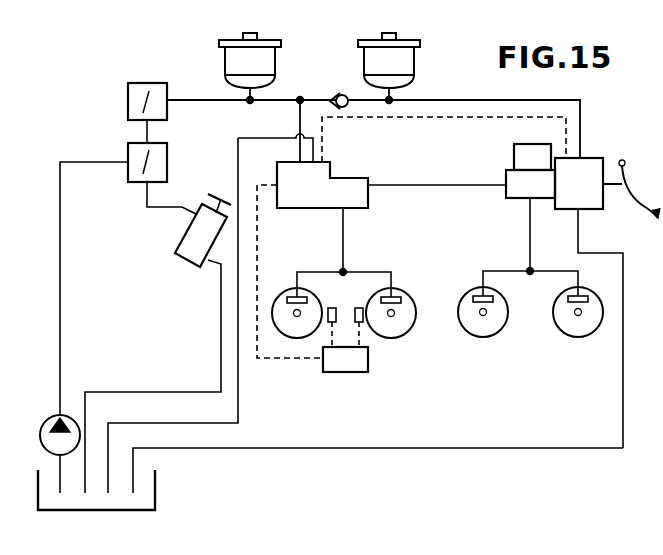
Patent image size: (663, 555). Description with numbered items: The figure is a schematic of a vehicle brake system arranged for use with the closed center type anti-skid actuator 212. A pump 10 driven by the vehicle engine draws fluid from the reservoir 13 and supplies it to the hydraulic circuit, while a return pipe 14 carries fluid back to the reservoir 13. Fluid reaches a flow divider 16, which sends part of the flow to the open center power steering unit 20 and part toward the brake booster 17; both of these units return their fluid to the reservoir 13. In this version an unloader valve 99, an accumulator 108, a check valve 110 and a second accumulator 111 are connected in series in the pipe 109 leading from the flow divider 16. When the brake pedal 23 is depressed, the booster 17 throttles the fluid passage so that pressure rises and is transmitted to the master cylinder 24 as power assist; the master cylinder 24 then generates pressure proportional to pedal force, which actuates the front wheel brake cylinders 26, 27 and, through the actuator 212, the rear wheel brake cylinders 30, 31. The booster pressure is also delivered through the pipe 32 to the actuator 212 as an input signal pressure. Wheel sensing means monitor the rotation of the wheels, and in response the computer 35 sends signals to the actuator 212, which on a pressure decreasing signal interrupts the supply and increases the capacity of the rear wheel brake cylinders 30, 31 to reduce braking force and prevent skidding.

The pump 10 is at (48, 420).
The reservoir 13 is at (47, 478).
The return pipe 14 is at (240, 420).
The flow divider 16 is at (168, 164).
The brake booster 17 is at (606, 158).
The power steering unit 20 is at (180, 257).
The brake pedal 23 is at (634, 195).
The master cylinder 24 is at (506, 172).
The front wheel brake cylinder 26 is at (478, 296).
The front wheel brake cylinder 27 is at (584, 296).
The rear wheel brake cylinder 30 is at (294, 296).
The rear wheel brake cylinder 31 is at (396, 296).
The pipe 32 is at (460, 122).
The computer 35 is at (355, 372).
The unloader valve 99 is at (168, 86).
The accumulator 108 is at (278, 58).
The pipe 109 is at (283, 102).
The check valve 110 is at (345, 95).
The accumulator 111 is at (418, 58).
The actuator 212 is at (345, 176).